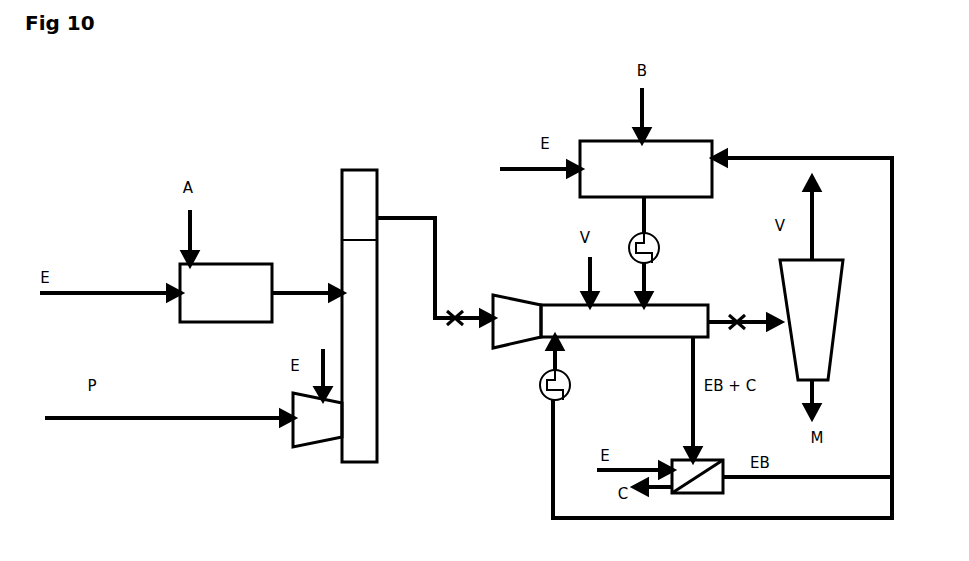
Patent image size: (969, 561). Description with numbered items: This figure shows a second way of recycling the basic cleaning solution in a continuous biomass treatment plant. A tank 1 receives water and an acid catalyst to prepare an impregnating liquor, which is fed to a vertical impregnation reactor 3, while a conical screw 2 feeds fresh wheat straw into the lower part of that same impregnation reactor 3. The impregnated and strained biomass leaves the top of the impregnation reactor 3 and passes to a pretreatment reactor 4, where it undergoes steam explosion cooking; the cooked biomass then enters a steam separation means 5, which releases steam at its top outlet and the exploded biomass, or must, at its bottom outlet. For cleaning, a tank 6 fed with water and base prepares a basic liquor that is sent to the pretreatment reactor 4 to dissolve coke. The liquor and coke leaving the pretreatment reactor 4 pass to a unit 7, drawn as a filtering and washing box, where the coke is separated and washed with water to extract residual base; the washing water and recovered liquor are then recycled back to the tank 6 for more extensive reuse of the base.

The tank 1 is at (226, 293).
The conical screw 2 is at (317, 420).
The impregnation reactor 3 is at (359, 316).
The pretreatment reactor 4 is at (600, 321).
The steam separation means 5 is at (811, 320).
The tank for preparing a cleaning liquor 6 is at (646, 169).
The separation unit 7 is at (697, 476).